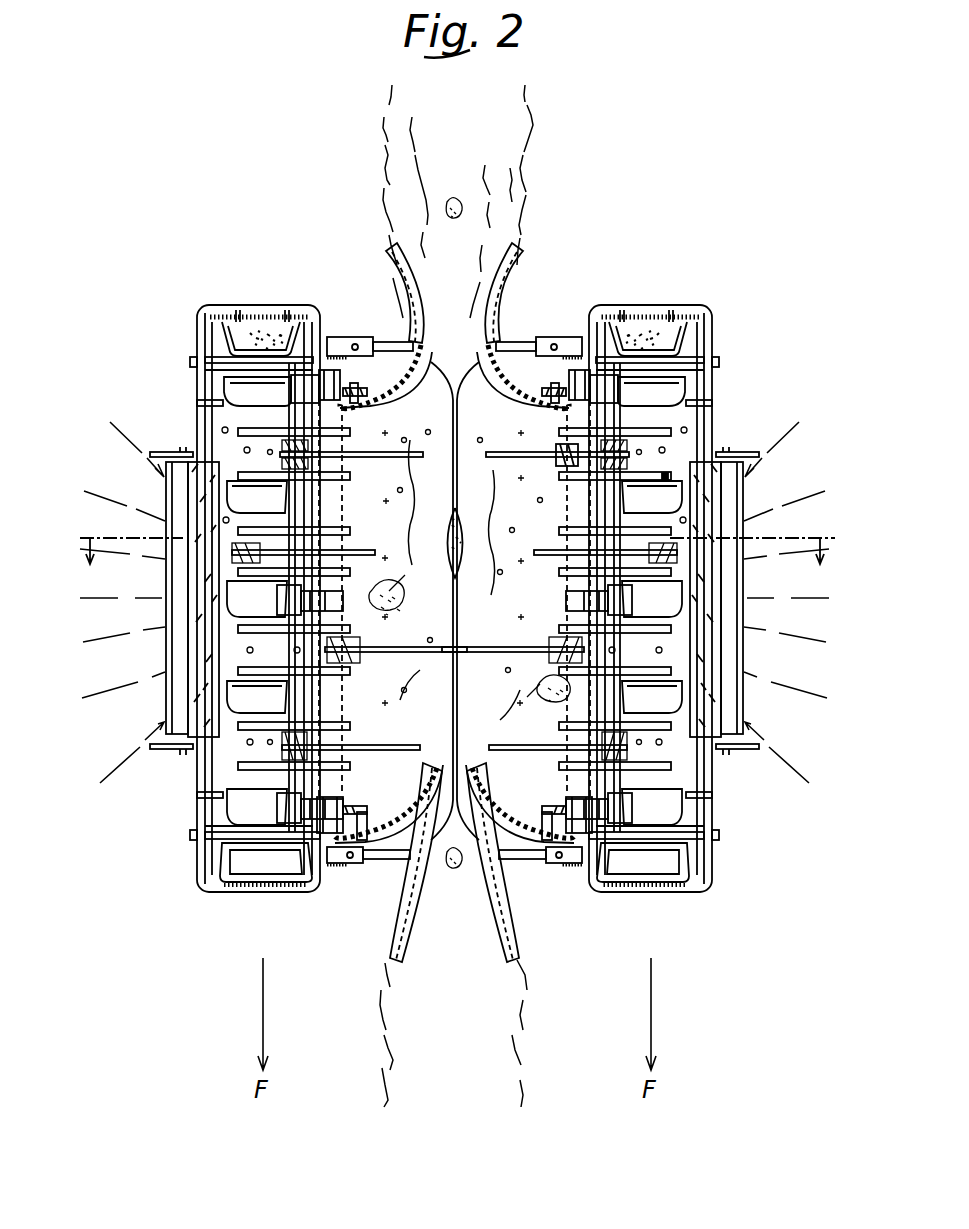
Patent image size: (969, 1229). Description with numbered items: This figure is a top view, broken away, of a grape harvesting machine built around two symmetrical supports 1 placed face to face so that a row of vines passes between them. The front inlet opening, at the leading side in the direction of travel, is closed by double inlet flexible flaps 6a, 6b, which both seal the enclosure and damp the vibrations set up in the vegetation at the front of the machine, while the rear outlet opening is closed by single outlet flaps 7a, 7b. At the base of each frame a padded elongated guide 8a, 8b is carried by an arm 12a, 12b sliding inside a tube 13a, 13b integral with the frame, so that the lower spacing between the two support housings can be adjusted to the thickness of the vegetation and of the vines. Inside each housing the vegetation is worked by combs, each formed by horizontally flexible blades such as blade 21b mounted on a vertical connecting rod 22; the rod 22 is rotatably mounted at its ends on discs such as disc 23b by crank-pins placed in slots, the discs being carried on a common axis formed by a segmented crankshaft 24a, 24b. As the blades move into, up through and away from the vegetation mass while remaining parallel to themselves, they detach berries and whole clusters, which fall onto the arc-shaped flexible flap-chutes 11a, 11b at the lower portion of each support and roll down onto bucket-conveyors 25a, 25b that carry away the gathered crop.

The support 1 is at (457, 568).
The inlet flexible flap 6a is at (422, 845).
The inlet flexible flap 6b is at (488, 816).
The outlet flexible flap 7a is at (377, 343).
The outlet flexible flap 7b is at (528, 345).
The padded elongated guide 8a is at (388, 258).
The padded elongated guide 8b is at (518, 254).
The flexible flap 11a is at (215, 776).
The flexible flap 11b is at (690, 778).
The arm 12a is at (358, 338).
The arm 12b is at (512, 340).
The tube 13a is at (330, 340).
The tube 13b is at (573, 340).
The horizontally flexible blade 21b is at (494, 462).
The vertical connecting rod 22 is at (555, 465).
The disc 23b is at (665, 476).
The segmented crankshaft 24a is at (292, 407).
The segmented crankshaft 24b is at (615, 423).
The bucket-conveyor 25a is at (240, 870).
The bucket-conveyor 25b is at (675, 872).